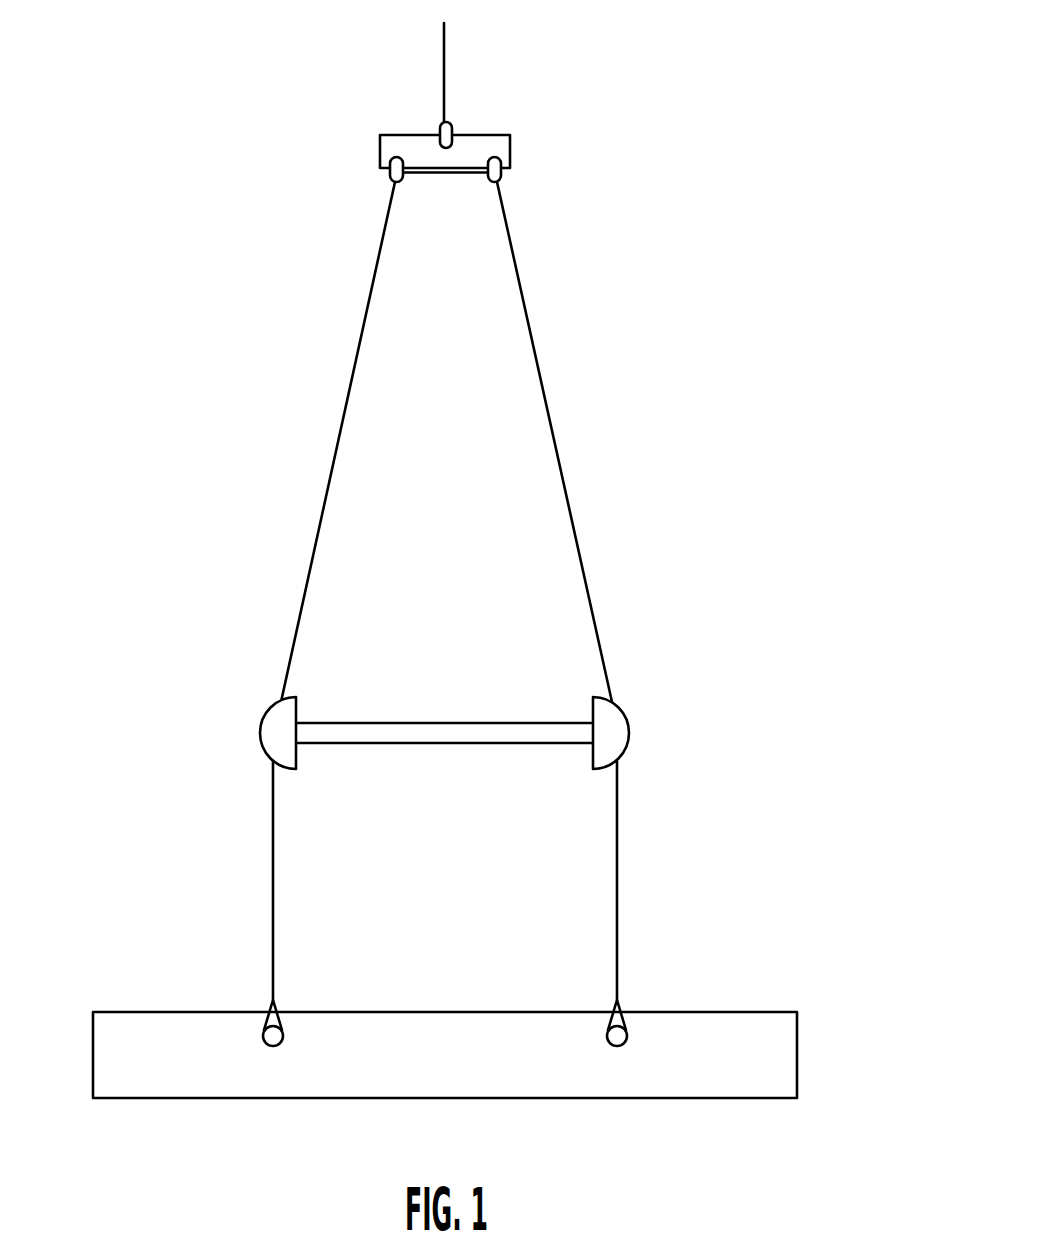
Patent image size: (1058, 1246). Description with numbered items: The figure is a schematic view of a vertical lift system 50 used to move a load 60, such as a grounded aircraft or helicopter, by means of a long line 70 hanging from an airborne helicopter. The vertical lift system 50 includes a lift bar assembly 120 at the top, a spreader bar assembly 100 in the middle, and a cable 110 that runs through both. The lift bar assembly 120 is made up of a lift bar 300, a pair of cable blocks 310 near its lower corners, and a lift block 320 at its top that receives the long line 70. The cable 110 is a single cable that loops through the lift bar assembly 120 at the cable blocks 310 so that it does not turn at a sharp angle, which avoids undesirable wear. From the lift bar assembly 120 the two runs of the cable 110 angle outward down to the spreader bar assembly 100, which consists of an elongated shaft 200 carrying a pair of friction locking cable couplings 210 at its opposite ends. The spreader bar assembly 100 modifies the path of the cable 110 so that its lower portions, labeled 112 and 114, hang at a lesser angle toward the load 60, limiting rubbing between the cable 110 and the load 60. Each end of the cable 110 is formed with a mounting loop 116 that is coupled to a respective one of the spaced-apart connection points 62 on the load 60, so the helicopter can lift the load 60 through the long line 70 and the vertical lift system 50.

The vertical lift system 50 is at (696, 120).
The load 60 is at (775, 1060).
The connection points 62 is at (267, 1036).
The long line 70 is at (444, 70).
The spreader bar assembly 100 is at (449, 748).
The cable 110 is at (563, 460).
The first cable end 112 is at (284, 986).
The second cable end 114 is at (623, 986).
The mounting loops 116 is at (284, 1020).
The lift bar assembly 120 is at (435, 175).
The elongated shaft 200 is at (400, 733).
The cable couplings 210 is at (276, 735).
The lift bar 300 is at (500, 148).
The cable blocks 310 is at (389, 172).
The lift block 320 is at (452, 128).